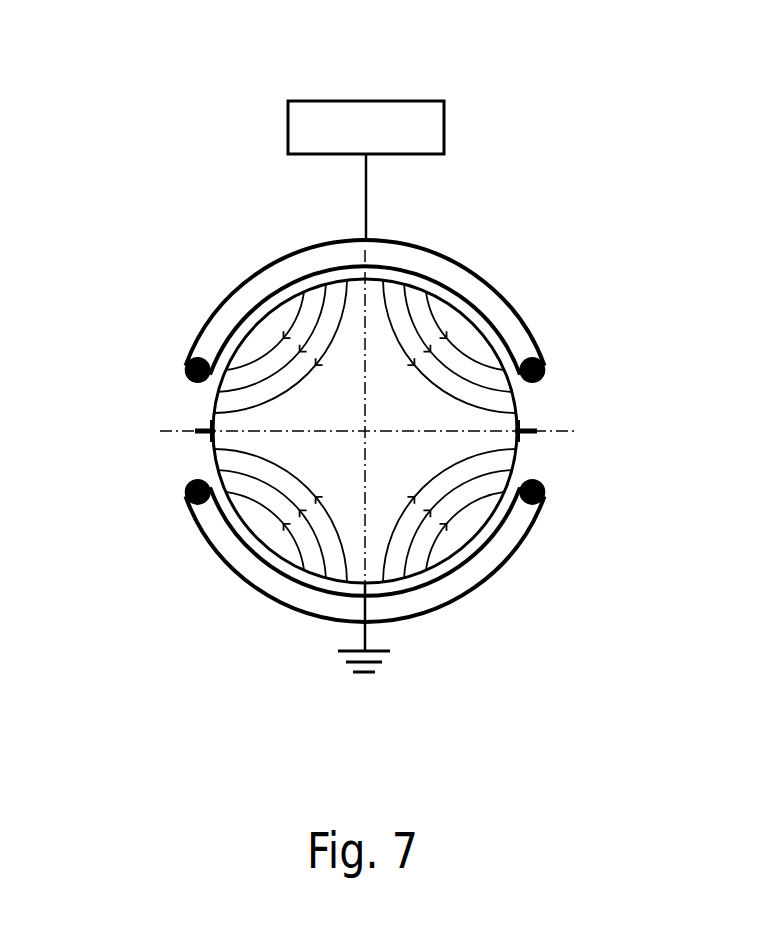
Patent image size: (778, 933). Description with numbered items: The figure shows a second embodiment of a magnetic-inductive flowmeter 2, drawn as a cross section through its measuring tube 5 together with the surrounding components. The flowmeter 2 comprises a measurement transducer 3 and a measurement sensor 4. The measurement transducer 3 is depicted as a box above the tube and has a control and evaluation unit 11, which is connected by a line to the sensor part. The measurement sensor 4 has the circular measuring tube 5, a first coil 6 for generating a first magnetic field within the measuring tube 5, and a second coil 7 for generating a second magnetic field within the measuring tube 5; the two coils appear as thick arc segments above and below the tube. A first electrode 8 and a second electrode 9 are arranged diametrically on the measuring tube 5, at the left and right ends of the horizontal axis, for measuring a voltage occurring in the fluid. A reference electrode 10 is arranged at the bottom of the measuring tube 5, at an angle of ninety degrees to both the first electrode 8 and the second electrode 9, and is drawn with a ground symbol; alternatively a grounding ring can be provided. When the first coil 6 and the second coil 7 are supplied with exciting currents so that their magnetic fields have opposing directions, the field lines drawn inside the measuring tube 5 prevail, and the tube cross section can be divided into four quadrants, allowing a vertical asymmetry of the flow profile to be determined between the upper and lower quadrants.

The magnetic-inductive flowmeter 2 is at (122, 135).
The measurement transducer 3 is at (508, 133).
The measurement sensor 4 is at (122, 272).
The measuring tube 5 is at (513, 465).
The first coil 6 is at (516, 312).
The second coil 7 is at (513, 552).
The first electrode 8 is at (208, 428).
The second electrode 9 is at (525, 427).
The reference electrode 10 is at (364, 586).
The control and evaluation unit 11 is at (426, 101).